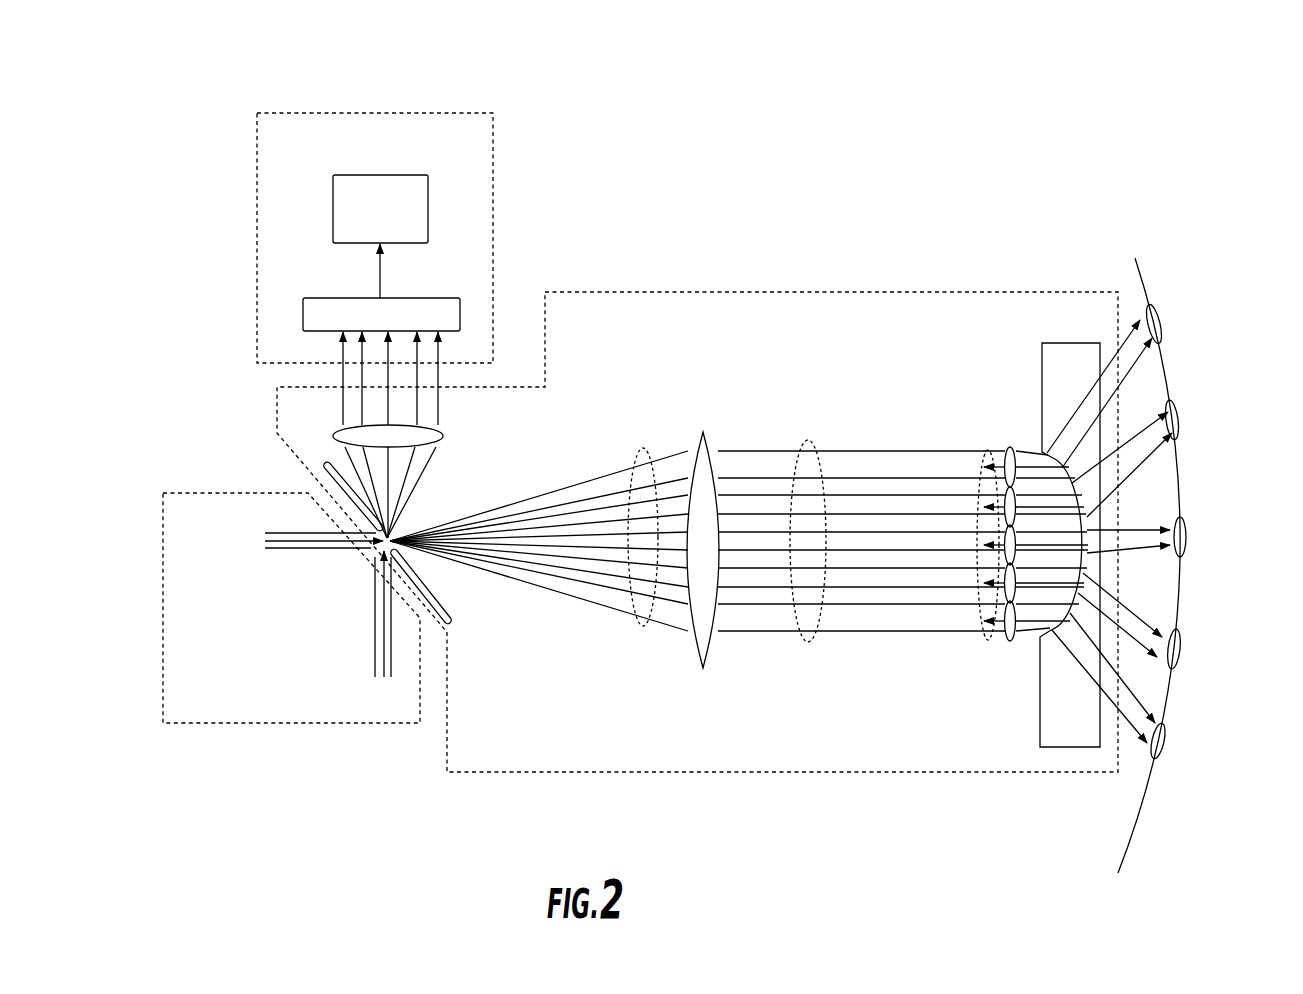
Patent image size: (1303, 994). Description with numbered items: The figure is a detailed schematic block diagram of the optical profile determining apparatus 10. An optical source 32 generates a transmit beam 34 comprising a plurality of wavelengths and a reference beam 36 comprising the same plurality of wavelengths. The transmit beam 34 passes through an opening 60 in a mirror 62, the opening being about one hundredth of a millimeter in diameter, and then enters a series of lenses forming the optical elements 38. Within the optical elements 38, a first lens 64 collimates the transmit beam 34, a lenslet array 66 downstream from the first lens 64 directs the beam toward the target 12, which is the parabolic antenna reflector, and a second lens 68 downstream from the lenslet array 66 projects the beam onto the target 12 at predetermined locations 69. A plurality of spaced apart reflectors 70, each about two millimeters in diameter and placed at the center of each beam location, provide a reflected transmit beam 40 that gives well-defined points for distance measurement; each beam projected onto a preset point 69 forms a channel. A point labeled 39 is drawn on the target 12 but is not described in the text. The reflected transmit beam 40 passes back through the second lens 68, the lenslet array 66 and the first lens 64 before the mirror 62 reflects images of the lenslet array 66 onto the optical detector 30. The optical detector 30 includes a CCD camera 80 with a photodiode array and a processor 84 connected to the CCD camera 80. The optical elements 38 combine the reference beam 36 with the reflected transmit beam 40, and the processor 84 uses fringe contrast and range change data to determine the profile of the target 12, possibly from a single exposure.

The optical profile determining apparatus 10 is at (698, 170).
The target 12 is at (1140, 268).
The optical detector 30 is at (257, 210).
The optical source 32 is at (163, 548).
The transmit beam 34 is at (275, 536).
The reference beam 36 is at (382, 680).
The optical elements 38 is at (825, 292).
The target surface region 39 is at (1143, 793).
The reflected transmit beam 40 is at (990, 455).
The opening 60 is at (413, 522).
The mirror 62 is at (448, 622).
The first lens 64 is at (703, 668).
The lenslet array 66 is at (1007, 642).
The second lens 68 is at (1063, 748).
The predetermined locations 69 is at (1152, 310).
The reflectors 70 is at (1161, 325).
The CCD camera 80 is at (303, 318).
The processor 84 is at (428, 208).